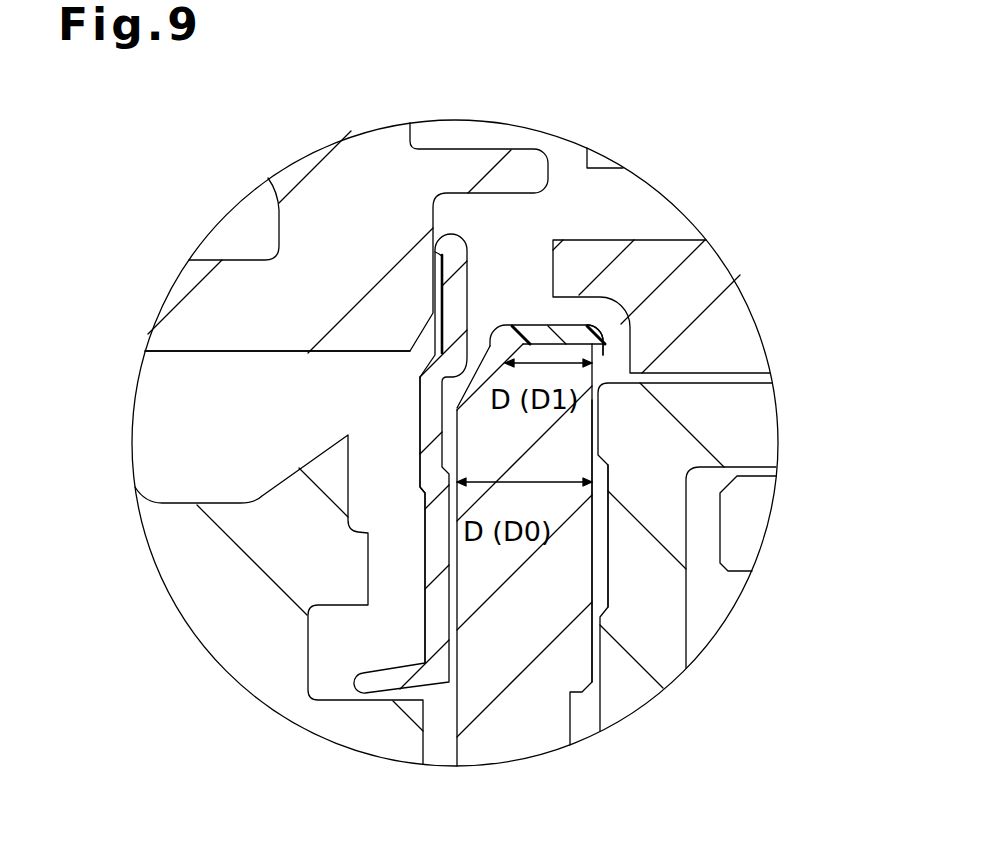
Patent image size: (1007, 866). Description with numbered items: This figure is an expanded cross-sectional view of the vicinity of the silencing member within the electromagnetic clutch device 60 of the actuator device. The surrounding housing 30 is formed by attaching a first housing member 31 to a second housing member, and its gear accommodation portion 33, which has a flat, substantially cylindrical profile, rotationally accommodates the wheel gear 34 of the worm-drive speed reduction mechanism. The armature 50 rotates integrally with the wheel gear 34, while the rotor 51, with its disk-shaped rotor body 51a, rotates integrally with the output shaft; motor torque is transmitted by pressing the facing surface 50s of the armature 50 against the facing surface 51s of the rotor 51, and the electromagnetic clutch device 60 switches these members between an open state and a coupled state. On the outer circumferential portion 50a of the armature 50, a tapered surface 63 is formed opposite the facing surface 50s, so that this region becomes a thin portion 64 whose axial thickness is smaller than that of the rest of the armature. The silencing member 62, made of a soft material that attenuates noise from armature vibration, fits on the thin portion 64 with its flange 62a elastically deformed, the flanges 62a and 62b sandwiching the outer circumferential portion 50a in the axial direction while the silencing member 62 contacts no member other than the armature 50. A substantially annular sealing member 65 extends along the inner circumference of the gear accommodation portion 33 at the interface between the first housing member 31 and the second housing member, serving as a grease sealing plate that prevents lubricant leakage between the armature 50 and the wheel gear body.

The housing 30 is at (339, 443).
The gear accommodation portion 33 is at (200, 260).
The first housing member 31 is at (195, 344).
The wheel gear 34 is at (290, 469).
The electromagnetic clutch device 60 is at (431, 460).
The silencing member 62 is at (522, 336).
The flange 62a is at (453, 377).
The flange 62b is at (607, 346).
The tapered surface 63 is at (467, 400).
The thin portion 64 is at (578, 356).
The outer circumferential portion 50a is at (658, 260).
The sealing member 65 is at (418, 427).
The armature 50 is at (497, 576).
The facing surface 50s is at (596, 533).
The rotor 51 is at (719, 557).
The rotor body 51a is at (780, 568).
The facing surface 51s is at (607, 516).